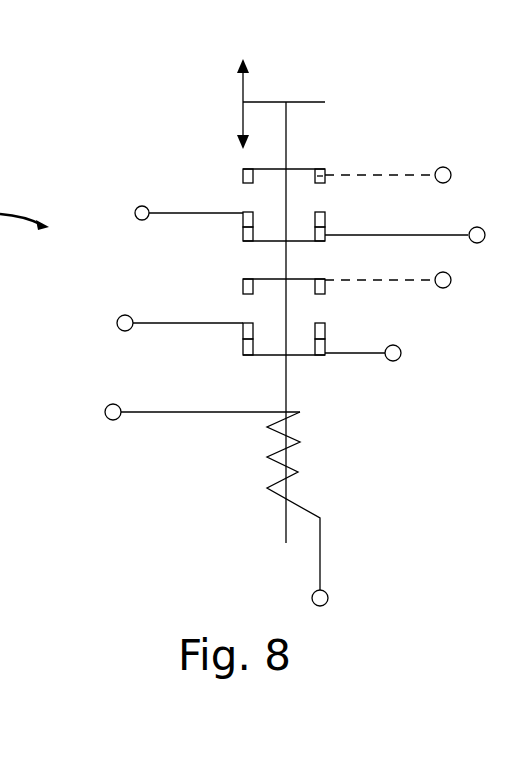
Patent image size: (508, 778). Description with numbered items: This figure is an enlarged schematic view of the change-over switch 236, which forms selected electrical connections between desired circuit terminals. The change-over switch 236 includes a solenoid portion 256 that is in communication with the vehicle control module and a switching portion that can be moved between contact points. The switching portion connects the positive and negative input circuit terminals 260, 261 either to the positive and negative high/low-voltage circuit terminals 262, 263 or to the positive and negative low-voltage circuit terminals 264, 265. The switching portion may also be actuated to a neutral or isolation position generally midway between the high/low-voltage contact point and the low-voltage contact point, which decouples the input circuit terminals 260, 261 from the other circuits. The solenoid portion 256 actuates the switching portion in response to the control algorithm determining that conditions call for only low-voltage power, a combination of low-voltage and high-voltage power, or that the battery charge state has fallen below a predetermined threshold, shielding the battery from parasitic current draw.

The change-over switch 236 is at (152, 120).
The positive input circuit terminal 260 is at (245, 210).
The positive high/low-voltage circuit terminal 262 is at (245, 233).
The negative input circuit terminal 261 is at (243, 323).
The positive low-voltage circuit terminal 264 is at (326, 174).
The negative low-voltage circuit terminal 265 is at (320, 295).
The negative high/low-voltage circuit terminal 263 is at (320, 357).
The solenoid portion 256 is at (332, 452).